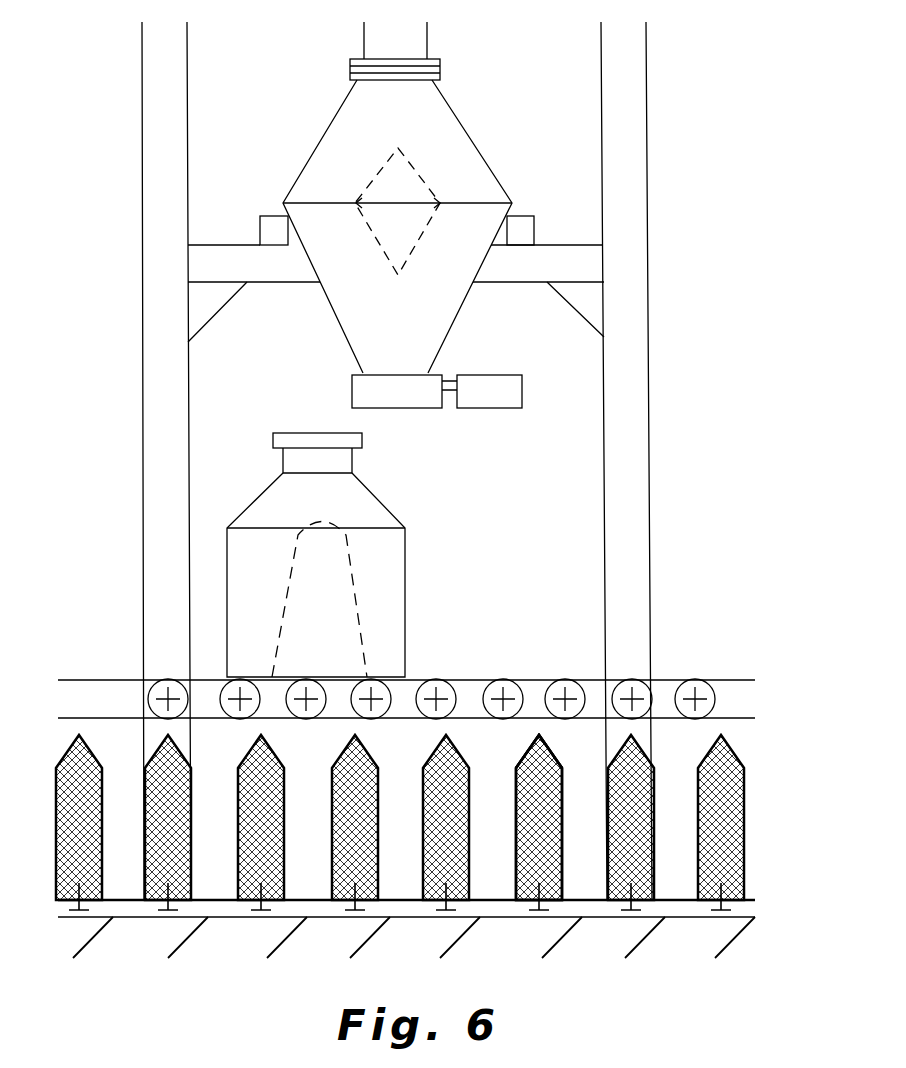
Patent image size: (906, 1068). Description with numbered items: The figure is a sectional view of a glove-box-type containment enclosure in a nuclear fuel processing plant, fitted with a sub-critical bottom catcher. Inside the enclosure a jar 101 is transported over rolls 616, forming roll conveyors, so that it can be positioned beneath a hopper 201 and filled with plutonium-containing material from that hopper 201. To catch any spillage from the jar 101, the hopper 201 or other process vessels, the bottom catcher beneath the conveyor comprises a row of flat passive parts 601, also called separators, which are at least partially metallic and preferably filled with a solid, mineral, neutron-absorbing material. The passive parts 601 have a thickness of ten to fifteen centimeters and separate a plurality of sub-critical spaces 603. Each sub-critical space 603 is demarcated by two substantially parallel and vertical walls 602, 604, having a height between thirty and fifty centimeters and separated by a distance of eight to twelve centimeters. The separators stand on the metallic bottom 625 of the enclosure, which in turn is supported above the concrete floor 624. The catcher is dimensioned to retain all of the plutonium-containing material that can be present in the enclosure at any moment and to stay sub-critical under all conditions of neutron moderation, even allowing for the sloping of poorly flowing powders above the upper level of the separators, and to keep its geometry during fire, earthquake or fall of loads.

The hopper 201 is at (460, 113).
The jar 101 is at (385, 502).
The passive parts 601 is at (362, 750).
The wall 602 is at (563, 777).
The sub-critical space 603 is at (482, 785).
The wall 604 is at (553, 757).
The rolls 616 is at (430, 718).
The concrete floor 624 is at (233, 930).
The metallic bottom 625 is at (395, 900).